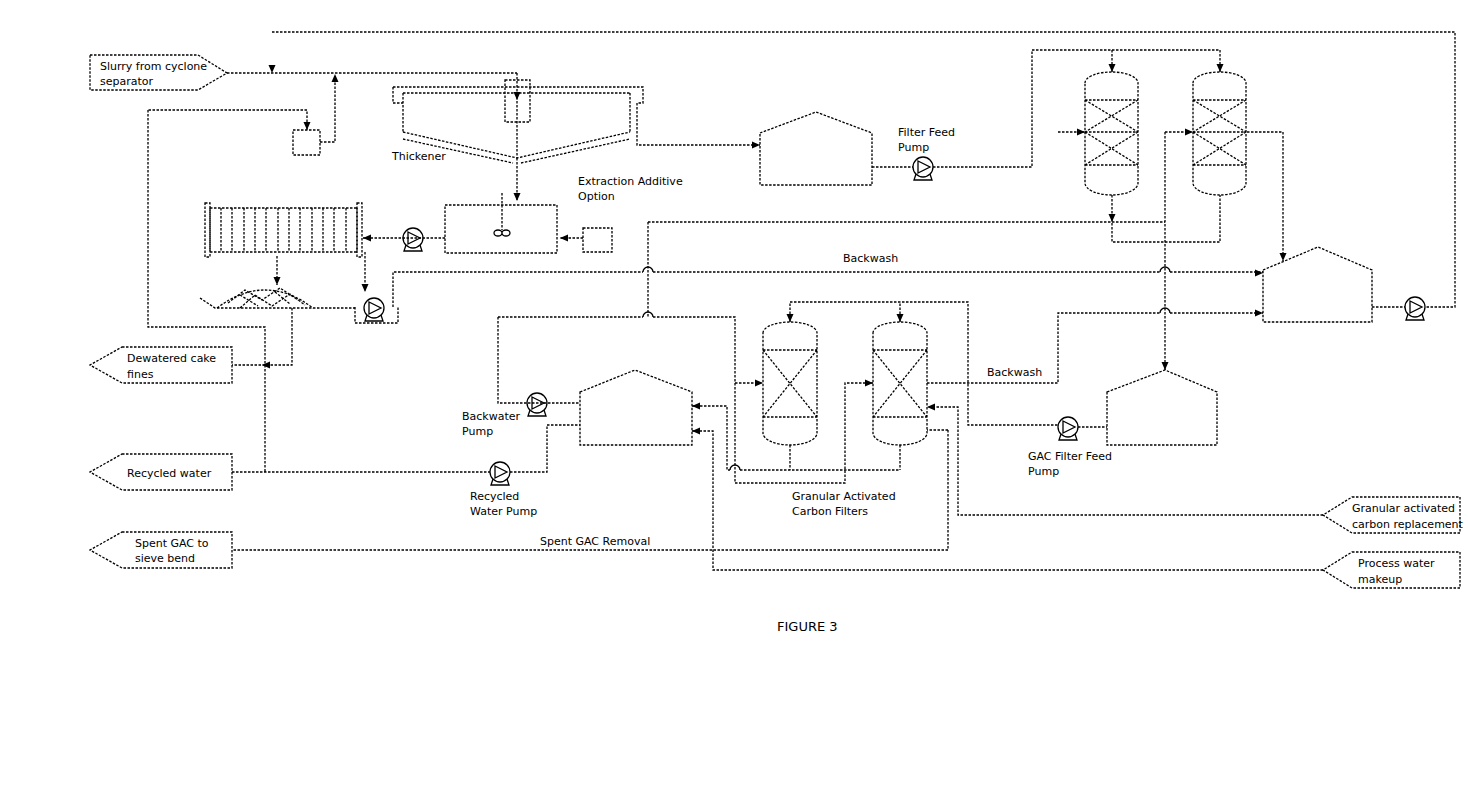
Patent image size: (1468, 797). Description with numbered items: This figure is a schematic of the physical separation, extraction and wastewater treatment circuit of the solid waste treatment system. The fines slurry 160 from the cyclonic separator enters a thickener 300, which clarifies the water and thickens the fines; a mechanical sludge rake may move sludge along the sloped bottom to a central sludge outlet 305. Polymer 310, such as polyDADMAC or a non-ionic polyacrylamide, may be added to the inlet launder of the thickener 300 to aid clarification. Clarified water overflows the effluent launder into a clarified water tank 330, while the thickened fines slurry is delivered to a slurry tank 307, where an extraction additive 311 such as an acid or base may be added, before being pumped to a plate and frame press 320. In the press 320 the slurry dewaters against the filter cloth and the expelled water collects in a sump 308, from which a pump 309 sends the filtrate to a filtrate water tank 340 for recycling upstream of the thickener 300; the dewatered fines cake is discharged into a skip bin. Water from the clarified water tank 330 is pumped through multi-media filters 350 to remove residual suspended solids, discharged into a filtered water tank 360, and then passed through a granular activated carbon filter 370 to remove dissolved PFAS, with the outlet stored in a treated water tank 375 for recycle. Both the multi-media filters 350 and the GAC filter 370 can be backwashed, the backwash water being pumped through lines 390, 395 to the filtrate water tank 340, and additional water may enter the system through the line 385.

The fines slurry 160 is at (372, 67).
The thickener 300 is at (568, 105).
The central sludge outlet 305 is at (531, 179).
The slurry tank 307 is at (501, 229).
The sump 308 is at (385, 305).
The pump 309 is at (275, 338).
The polymer 310 is at (243, 122).
The extraction additive 311 is at (586, 231).
The plate and frame press 320 is at (283, 225).
The clarified water tank 330 is at (816, 156).
The filtrate water tank 340 is at (1317, 295).
The multi-media filters 350 is at (1131, 144).
The filtered water tank 360 is at (1162, 417).
The granular activated carbon filter 370 is at (807, 386).
The treated water tank 375 is at (636, 417).
The line 385 is at (1007, 499).
The line 390 is at (1095, 343).
The line 395 is at (906, 261).